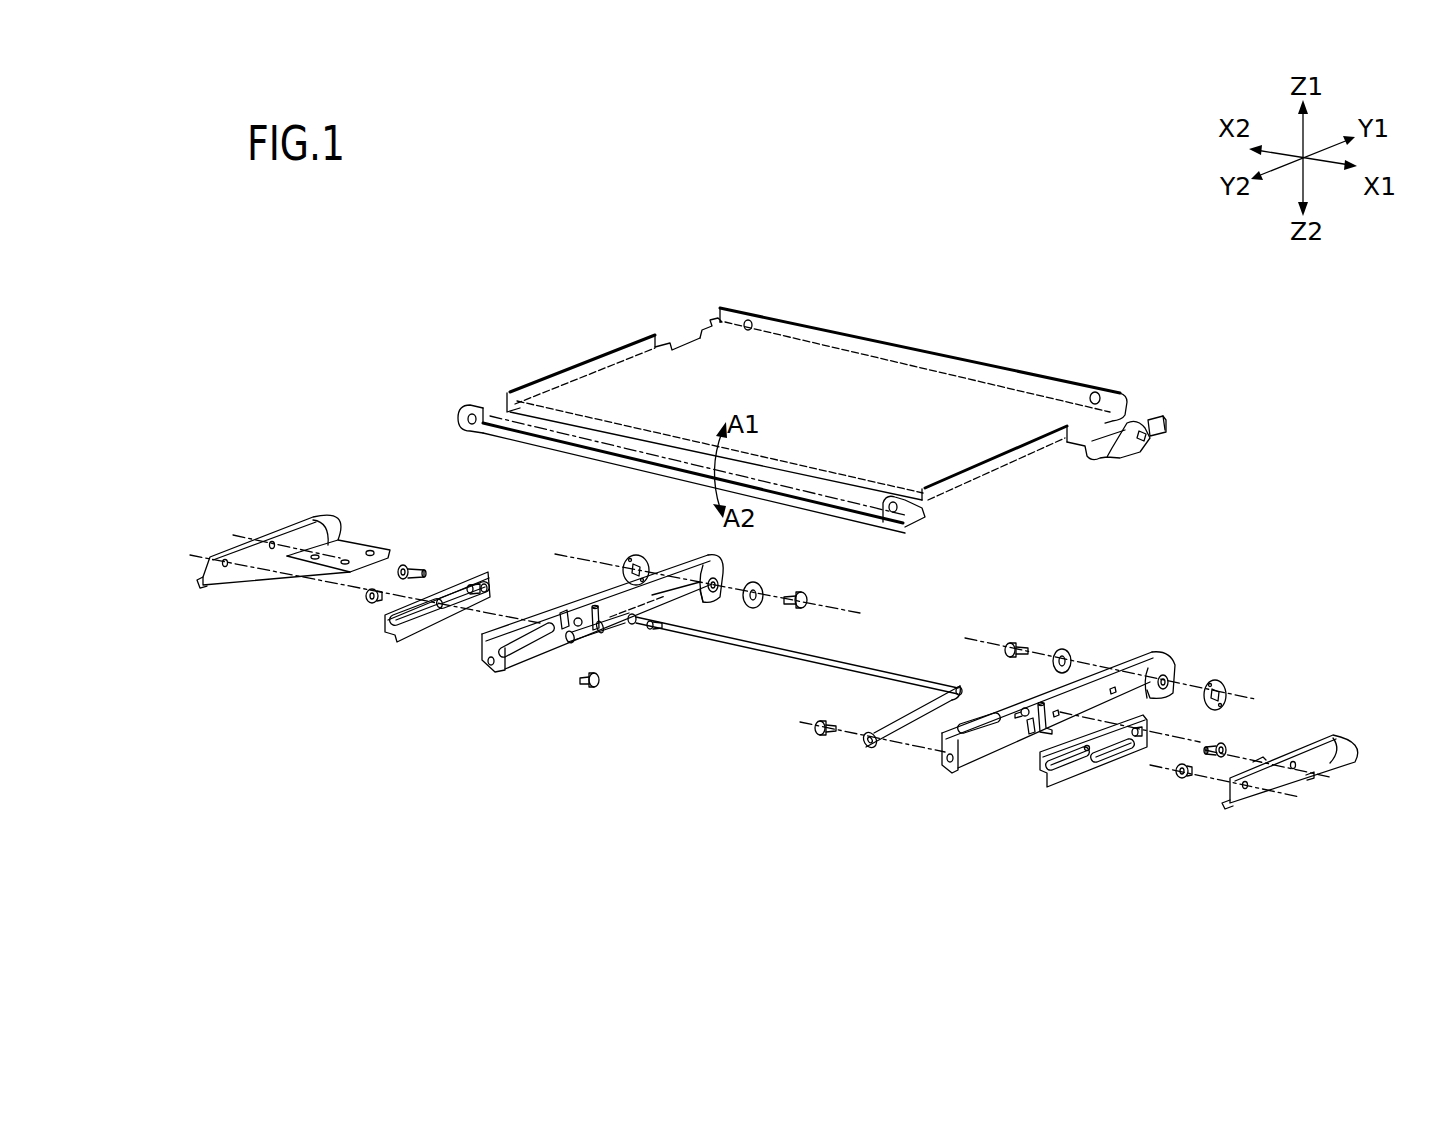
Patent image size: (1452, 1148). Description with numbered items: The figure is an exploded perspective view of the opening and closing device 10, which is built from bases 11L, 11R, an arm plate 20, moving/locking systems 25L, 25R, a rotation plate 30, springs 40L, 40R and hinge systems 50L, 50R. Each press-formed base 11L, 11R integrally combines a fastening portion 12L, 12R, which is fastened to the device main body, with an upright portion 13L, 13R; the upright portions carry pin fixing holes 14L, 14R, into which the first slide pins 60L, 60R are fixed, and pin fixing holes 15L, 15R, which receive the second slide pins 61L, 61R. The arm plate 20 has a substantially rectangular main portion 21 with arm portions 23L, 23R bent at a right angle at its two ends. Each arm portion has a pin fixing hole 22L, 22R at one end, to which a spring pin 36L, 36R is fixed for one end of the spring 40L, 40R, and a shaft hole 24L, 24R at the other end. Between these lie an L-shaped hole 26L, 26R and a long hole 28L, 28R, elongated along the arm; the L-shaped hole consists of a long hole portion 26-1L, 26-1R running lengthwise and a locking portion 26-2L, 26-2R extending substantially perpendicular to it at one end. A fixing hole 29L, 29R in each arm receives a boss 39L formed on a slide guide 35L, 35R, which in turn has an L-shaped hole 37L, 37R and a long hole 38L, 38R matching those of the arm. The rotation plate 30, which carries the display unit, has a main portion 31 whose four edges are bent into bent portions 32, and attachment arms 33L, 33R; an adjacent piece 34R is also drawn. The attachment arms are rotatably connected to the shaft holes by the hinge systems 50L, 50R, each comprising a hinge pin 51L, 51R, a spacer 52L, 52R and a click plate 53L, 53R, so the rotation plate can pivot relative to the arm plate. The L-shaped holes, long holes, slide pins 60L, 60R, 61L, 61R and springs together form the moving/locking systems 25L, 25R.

The opening and closing device 10 is at (881, 138).
The arm plate 20 is at (933, 663).
The main portion 21 is at (750, 633).
The pin fixing hole 22L is at (495, 670).
The pin fixing hole 22R is at (975, 765).
The arm portion 23L is at (695, 562).
The arm portion 23R is at (1140, 667).
The shaft hole 24L is at (718, 568).
The shaft hole 24R is at (1167, 677).
The moving/locking system 25L is at (500, 568).
The moving/locking system 25R is at (985, 790).
The L-shaped hole 26L is at (570, 630).
The L-shaped hole 26R is at (1013, 733).
The long hole portion 26-1L is at (565, 633).
The long hole portion 26-1R is at (1030, 735).
The locking portion 26-2L is at (592, 604).
The locking portion 26-2R is at (1030, 705).
The long hole 28L is at (533, 647).
The long hole 28R is at (977, 767).
The fixing hole 29L is at (618, 640).
The fixing hole 29R is at (1040, 712).
The rotation plate 30 is at (870, 392).
The main portion 31 is at (660, 378).
The bent portions 32 is at (565, 377).
The attachment arm 33L is at (685, 340).
The attachment arm 33R is at (1137, 453).
The right stopper 34R is at (1160, 432).
The slide guide 35L is at (415, 650).
The slide guide 35R is at (1110, 770).
The spring pin 36L is at (583, 687).
The spring pin 36R is at (820, 733).
The L-shaped hole 37L is at (463, 620).
The L-shaped hole 37R is at (1118, 760).
The long hole 38L is at (392, 627).
The long hole 38R is at (1072, 768).
The boss 39L is at (470, 583).
The spring 40L is at (615, 632).
The spring 40R is at (890, 720).
The hinge system 50L is at (733, 552).
The hinge system 50R is at (1227, 650).
The hinge pin 51L is at (797, 600).
The hinge pin 51R is at (1015, 640).
The spacer 52L is at (760, 580).
The spacer 52R is at (1067, 648).
The click plate 53L is at (627, 553).
The click plate 53R is at (1227, 687).
The first slide pin 60L is at (405, 565).
The first slide pin 60R is at (1222, 742).
The second slide pin 61L is at (362, 605).
The second slide pin 61R is at (1182, 779).
The base 11L is at (273, 520).
The base 11R is at (1263, 797).
The fastening portion 12L is at (347, 547).
The fastening portion 12R is at (1290, 745).
The upright portion 13L is at (310, 537).
The upright portion 13R is at (1335, 757).
The pin fixing hole 14L is at (272, 541).
The pin fixing hole 14R is at (1295, 769).
The pin fixing hole 15L is at (222, 558).
The pin fixing hole 15R is at (1245, 790).